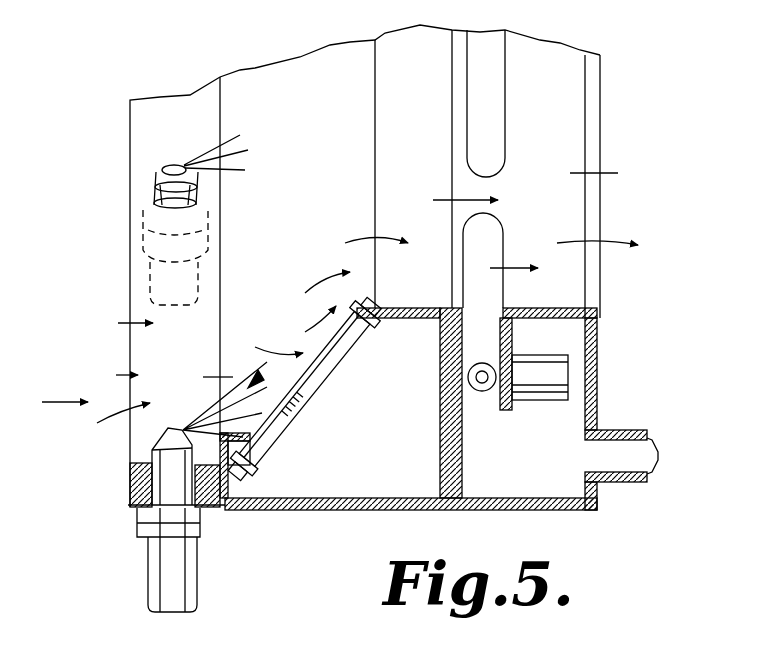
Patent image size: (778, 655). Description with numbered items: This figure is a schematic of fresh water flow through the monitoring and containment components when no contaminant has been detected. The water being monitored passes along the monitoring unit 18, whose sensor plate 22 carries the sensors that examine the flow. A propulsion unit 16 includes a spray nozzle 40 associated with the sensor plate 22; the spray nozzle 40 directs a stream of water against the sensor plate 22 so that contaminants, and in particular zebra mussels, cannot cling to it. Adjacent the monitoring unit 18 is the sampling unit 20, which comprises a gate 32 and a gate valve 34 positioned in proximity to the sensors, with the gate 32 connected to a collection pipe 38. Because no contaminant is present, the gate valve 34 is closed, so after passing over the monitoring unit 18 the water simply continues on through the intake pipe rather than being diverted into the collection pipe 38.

The propulsion unit 16 is at (173, 110).
The monitoring unit 18 is at (323, 70).
The sampling unit 20 is at (553, 77).
The sensor plate 22 is at (337, 365).
The gate 32 is at (493, 238).
The gate valve 34 is at (483, 391).
The collection pipe 38 is at (655, 455).
The spray nozzle 40 is at (163, 467).